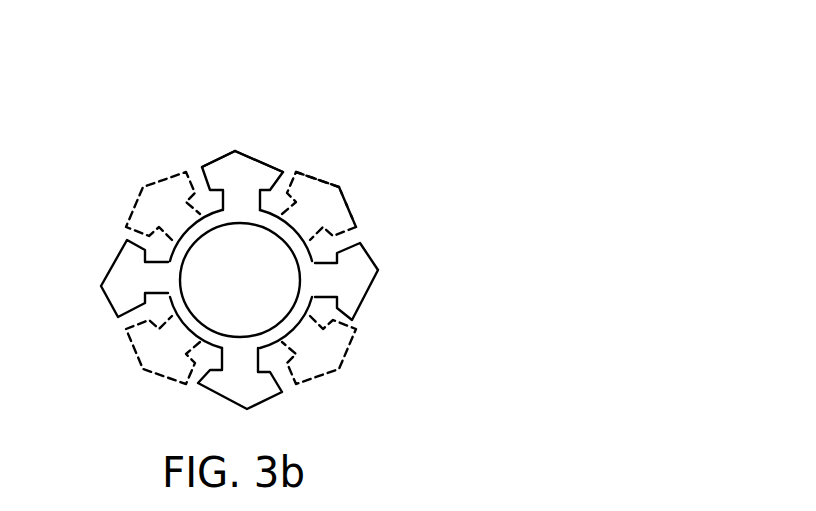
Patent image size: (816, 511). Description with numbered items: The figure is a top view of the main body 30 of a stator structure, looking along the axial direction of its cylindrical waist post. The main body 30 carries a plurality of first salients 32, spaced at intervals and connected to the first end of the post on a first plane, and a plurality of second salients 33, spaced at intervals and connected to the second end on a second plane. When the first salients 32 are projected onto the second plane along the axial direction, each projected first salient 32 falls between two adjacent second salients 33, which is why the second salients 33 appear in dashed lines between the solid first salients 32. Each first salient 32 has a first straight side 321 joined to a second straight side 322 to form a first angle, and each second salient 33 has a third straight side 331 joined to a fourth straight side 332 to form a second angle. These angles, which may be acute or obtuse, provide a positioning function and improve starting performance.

The main body 30 is at (103, 67).
The first salient 32 is at (258, 160).
The first straight side 321 is at (277, 163).
The second straight side 322 is at (222, 157).
The second salient 33 is at (338, 190).
The third straight side 331 is at (343, 207).
The fourth straight side 332 is at (325, 177).